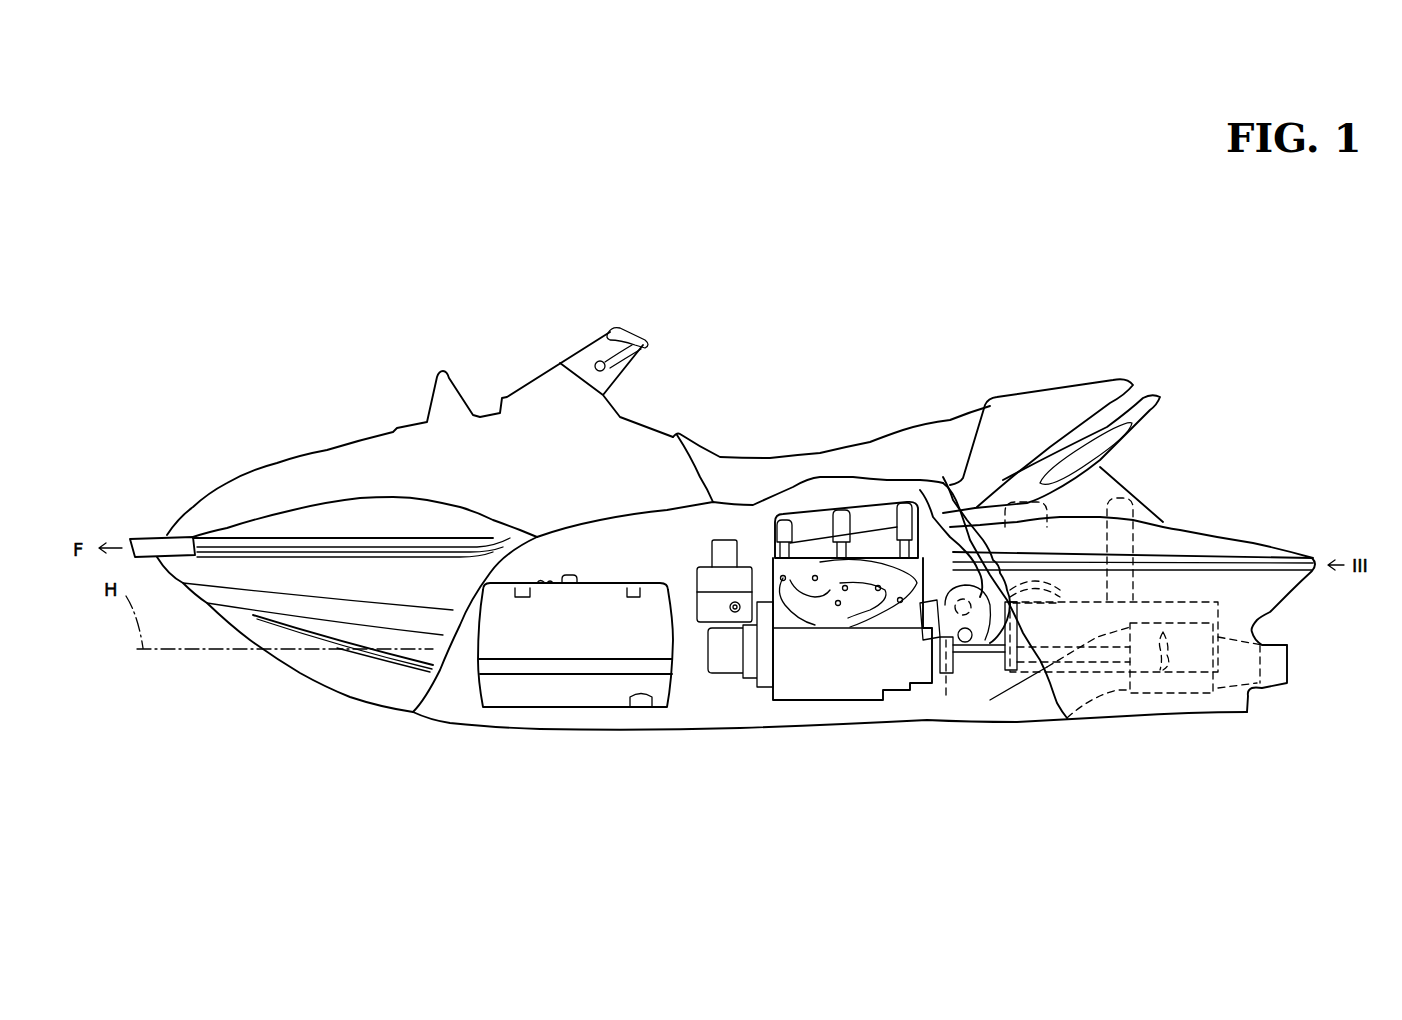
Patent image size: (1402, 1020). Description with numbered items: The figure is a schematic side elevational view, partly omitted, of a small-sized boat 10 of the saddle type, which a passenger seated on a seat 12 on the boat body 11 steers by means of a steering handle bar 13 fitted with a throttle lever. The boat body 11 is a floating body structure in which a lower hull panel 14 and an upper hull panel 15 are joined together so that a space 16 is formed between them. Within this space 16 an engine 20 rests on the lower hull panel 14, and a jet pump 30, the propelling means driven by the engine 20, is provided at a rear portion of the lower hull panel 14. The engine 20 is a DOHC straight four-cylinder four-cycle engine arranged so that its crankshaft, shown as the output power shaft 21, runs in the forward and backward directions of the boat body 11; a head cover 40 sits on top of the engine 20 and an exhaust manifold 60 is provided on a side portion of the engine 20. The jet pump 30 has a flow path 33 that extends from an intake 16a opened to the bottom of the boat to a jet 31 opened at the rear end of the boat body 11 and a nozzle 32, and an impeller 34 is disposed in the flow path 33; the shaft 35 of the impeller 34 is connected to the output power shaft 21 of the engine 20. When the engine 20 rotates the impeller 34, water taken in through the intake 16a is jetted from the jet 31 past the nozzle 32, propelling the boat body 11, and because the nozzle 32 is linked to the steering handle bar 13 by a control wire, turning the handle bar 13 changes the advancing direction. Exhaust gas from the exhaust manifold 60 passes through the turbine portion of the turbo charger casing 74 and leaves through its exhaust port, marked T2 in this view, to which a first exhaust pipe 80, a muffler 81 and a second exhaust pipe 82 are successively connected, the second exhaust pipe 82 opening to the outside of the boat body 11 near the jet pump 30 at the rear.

The small-sized boat 10 is at (996, 350).
The boat body 11 is at (1126, 482).
The seat 12 is at (876, 449).
The steering handle bar 13 is at (653, 340).
The lower hull panel 14 is at (363, 683).
The upper hull panel 15 is at (277, 522).
The space 16 is at (537, 569).
The intake 16a is at (1013, 705).
The engine 20 is at (796, 712).
The output power shaft 21 is at (935, 667).
The jet pump 30 is at (1168, 706).
The jet 31 is at (1267, 643).
The nozzle 32 is at (1293, 645).
The flow path 33 is at (1104, 694).
The impeller 34 is at (1157, 665).
The shaft 35 is at (970, 660).
The head cover 40 is at (932, 499).
The exhaust manifold 60 is at (843, 626).
The casing 74 is at (937, 673).
The temperature sensor T2 is at (955, 725).
The first exhaust pipe 80 is at (1005, 502).
The muffler 81 is at (1190, 600).
The second exhaust pipe 82 is at (1167, 462).